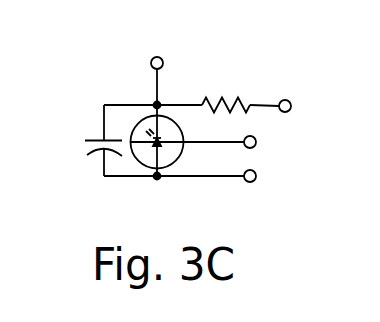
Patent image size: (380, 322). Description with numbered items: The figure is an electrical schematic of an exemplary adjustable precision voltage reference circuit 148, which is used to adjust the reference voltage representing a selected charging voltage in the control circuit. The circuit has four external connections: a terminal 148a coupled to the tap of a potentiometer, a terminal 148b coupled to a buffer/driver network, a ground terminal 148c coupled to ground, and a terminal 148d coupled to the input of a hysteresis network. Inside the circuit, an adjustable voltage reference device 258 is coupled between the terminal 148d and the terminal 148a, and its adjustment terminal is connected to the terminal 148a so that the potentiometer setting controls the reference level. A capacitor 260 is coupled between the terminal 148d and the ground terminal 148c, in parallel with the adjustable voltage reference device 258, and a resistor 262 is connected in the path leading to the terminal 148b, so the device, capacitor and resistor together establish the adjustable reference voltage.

The adjustable precision voltage reference circuit 148 is at (177, 34).
The terminal 148a is at (255, 147).
The terminal 148b is at (291, 107).
The ground terminal 148c is at (255, 181).
The terminal 148d is at (152, 67).
The adjustable voltage reference device 258 is at (181, 132).
The capacitor 260 is at (88, 153).
The resistor 262 is at (240, 91).